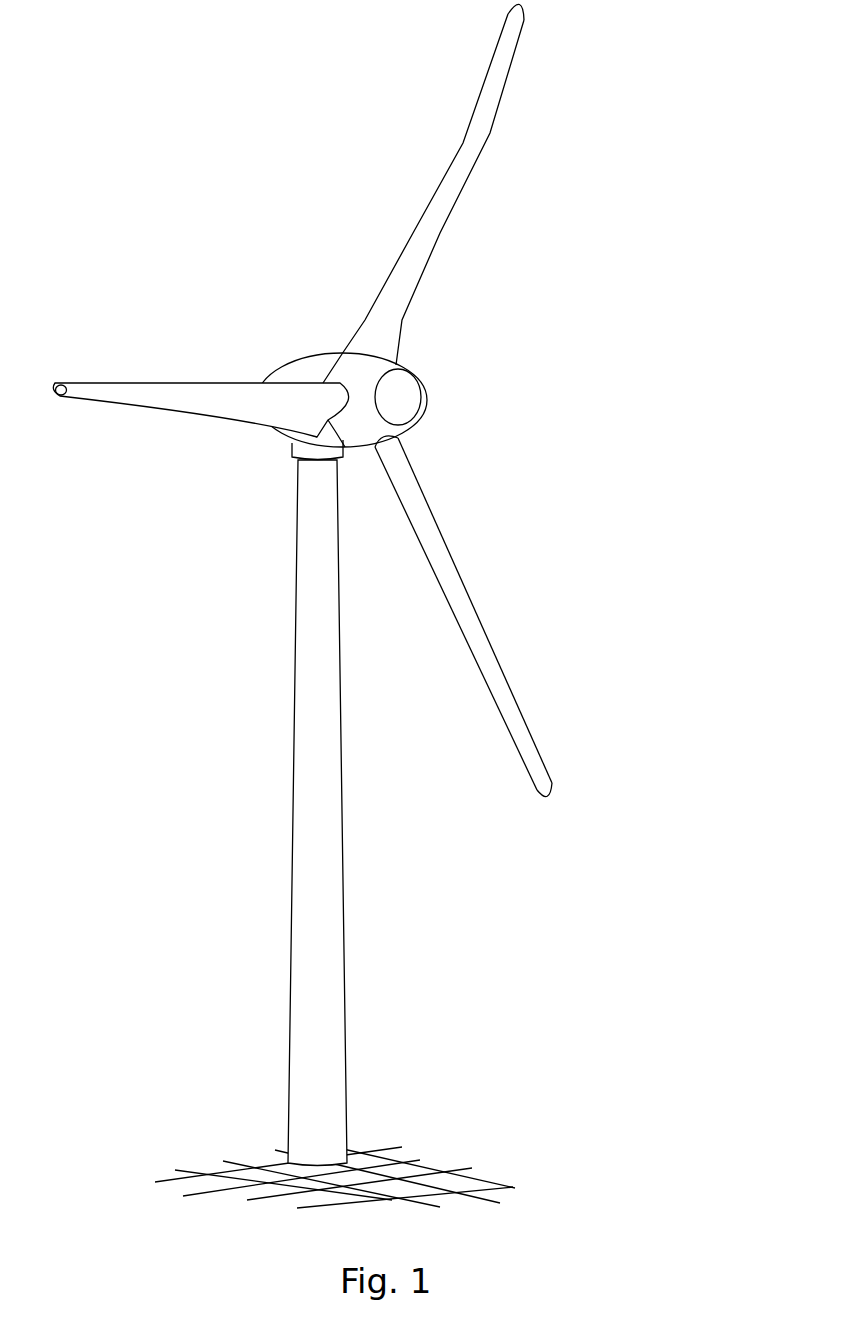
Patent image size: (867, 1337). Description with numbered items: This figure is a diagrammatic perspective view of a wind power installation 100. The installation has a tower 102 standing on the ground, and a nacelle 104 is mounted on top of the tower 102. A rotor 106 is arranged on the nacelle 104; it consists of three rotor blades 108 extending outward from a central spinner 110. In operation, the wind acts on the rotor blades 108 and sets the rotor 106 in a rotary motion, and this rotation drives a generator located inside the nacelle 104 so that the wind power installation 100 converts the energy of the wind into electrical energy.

The wind power installation 100 is at (244, 546).
The tower 102 is at (330, 893).
The nacelle 104 is at (313, 375).
The rotor 106 is at (505, 305).
The rotor blades 108 is at (460, 145).
The spinner 110 is at (400, 395).